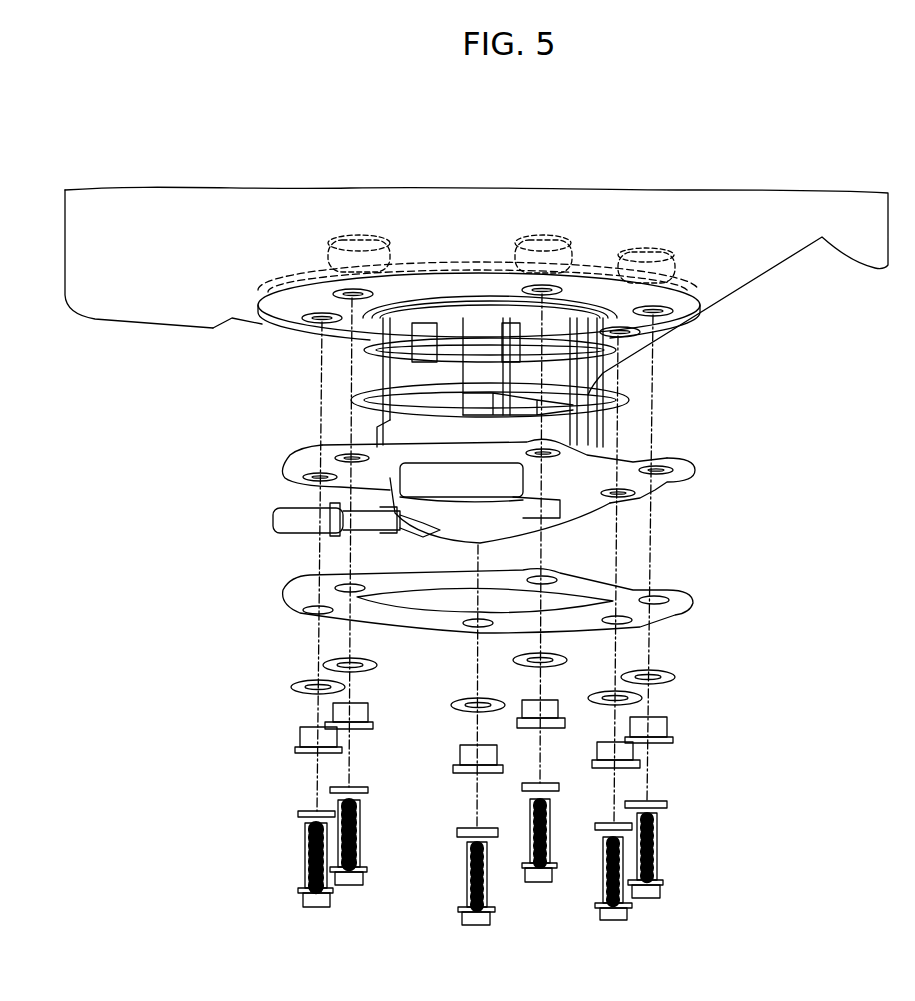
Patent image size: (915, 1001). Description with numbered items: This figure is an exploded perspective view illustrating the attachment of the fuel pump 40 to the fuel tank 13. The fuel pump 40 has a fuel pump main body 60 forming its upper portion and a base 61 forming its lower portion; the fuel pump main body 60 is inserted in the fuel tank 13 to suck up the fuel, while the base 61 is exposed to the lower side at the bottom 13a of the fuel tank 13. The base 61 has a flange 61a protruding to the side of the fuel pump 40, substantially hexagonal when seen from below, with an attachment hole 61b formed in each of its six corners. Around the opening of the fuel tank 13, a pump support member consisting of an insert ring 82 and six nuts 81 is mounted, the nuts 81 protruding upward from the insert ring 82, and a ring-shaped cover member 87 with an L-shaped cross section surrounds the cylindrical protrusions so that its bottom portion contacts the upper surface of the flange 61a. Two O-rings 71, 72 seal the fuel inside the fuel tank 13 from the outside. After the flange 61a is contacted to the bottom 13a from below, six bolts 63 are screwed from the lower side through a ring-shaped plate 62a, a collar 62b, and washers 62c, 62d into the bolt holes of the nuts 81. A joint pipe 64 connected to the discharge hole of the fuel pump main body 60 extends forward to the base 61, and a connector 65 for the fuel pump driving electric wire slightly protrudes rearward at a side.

The fuel tank 13 is at (760, 285).
The bottom 13a is at (250, 310).
The fuel pump 40 is at (680, 478).
The fuel pump main body 60 is at (407, 407).
The base 61 is at (305, 480).
The flange 61a is at (338, 500).
The attachment hole 61b is at (345, 448).
The ring-shaped plate 62a is at (677, 607).
The collar 62b is at (290, 750).
The washer 62c is at (290, 689).
The washer 62d is at (298, 813).
The bolt 63 is at (308, 867).
The joint pipe 64 is at (300, 532).
The connector 65 is at (593, 513).
The O-ring 71 is at (653, 417).
The O-ring 72 is at (617, 333).
The nut 81 is at (368, 238).
The insert ring 82 is at (697, 305).
The cover member 87 is at (677, 327).